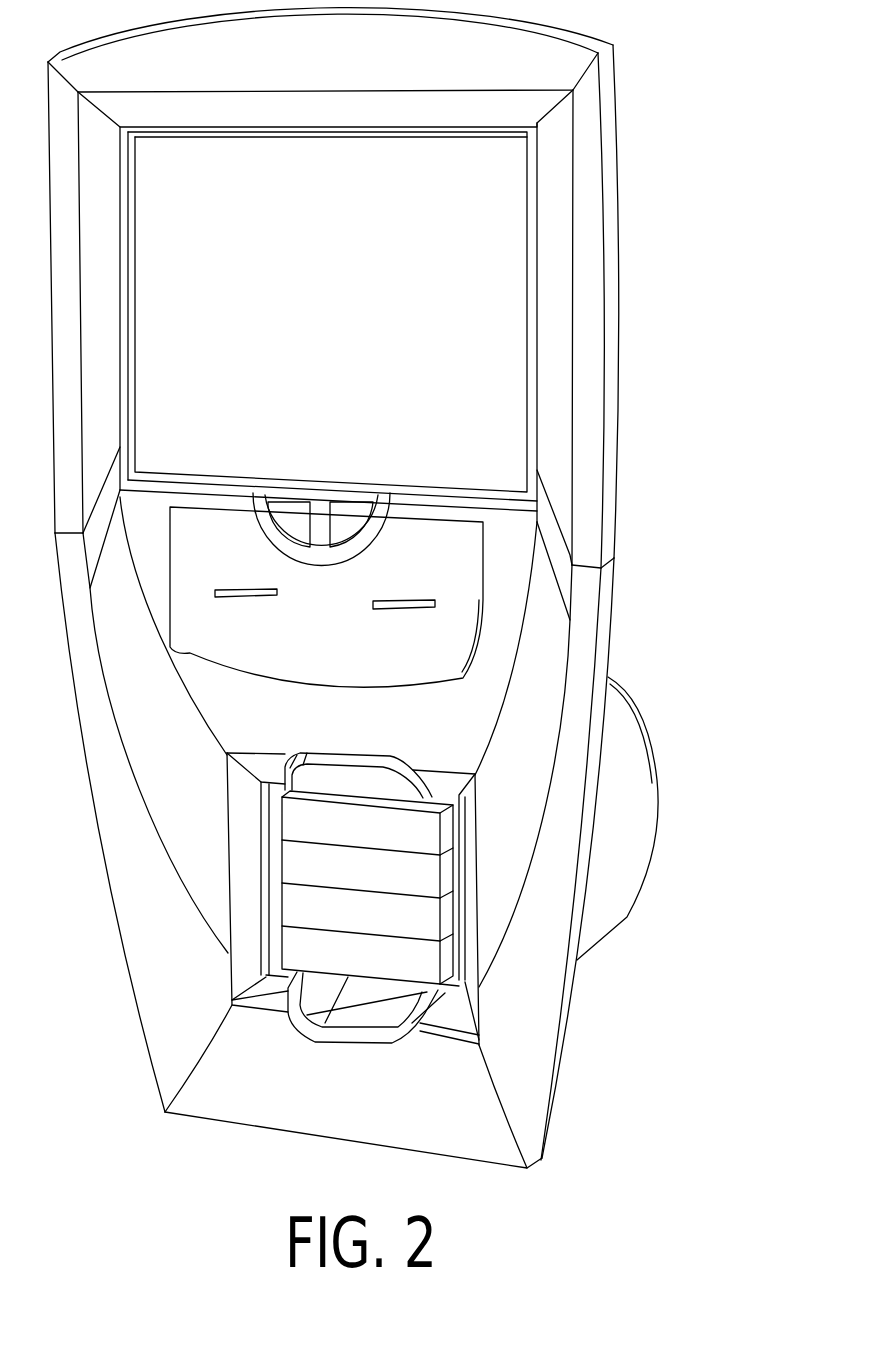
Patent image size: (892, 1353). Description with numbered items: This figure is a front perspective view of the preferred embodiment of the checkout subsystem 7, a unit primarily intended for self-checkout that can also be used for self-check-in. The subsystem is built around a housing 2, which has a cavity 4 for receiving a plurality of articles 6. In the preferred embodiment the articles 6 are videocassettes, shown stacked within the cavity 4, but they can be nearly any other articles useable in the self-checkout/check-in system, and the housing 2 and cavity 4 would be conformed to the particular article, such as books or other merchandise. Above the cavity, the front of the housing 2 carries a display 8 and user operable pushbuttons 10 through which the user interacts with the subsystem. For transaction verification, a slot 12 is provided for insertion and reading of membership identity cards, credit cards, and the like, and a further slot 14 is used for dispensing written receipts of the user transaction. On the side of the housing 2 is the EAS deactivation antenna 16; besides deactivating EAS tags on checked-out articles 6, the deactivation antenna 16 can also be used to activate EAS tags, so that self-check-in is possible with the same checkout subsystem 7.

The housing 2 is at (555, 1008).
The cavity 4 is at (276, 856).
The articles 6 is at (374, 842).
The checkout subsystem 7 is at (718, 468).
The display 8 is at (335, 270).
The user operable pushbuttons 10 is at (298, 515).
The slot 12 is at (405, 600).
The slot 14 is at (247, 592).
The EAS deactivation antenna 16 is at (628, 815).